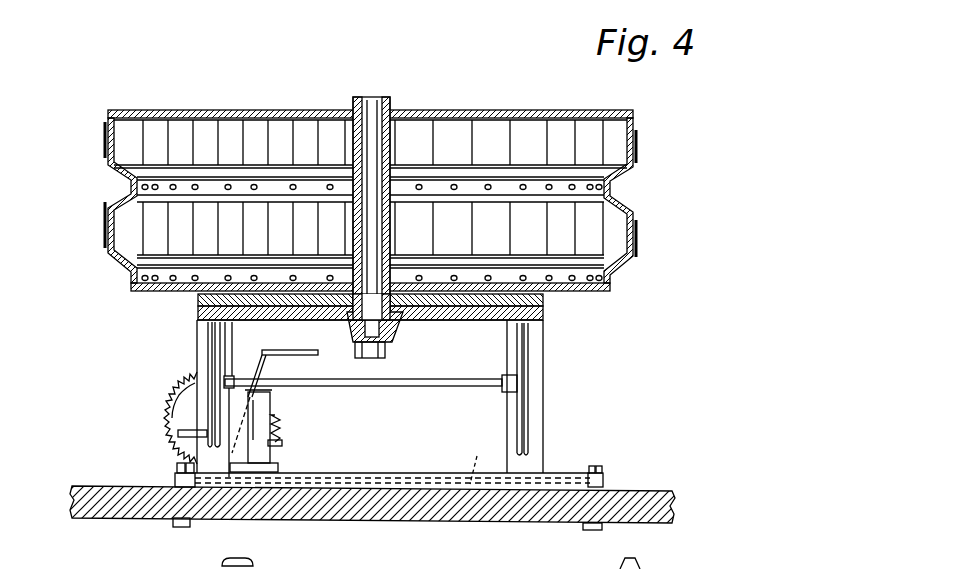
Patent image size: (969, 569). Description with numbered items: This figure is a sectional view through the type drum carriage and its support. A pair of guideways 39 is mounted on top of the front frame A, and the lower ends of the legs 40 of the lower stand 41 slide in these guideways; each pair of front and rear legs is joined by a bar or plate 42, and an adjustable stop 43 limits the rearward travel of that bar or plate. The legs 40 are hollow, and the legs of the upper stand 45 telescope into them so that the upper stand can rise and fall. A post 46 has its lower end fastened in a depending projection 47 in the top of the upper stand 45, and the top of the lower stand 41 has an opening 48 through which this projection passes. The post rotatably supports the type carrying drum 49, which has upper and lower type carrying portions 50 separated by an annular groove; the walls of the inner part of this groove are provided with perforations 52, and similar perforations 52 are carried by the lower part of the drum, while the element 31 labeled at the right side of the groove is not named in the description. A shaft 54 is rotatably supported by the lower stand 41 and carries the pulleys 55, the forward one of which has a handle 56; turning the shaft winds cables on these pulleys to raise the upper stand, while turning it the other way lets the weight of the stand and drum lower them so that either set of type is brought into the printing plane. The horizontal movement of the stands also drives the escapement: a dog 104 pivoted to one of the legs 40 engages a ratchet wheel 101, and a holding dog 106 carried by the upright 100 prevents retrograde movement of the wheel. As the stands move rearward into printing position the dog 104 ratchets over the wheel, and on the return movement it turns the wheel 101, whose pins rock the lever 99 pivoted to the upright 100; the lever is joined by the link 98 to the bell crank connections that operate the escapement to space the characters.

The type carrying drum 49 is at (573, 117).
The type carrying portions 50 is at (637, 147).
The perforated strip 31 is at (611, 188).
The perforations 52 is at (228, 184).
The post 46 is at (390, 100).
The opening 48 is at (392, 330).
The depending projection 47 is at (383, 355).
The upper stand 45 is at (543, 305).
The lower stand 41 is at (494, 322).
The legs 40 is at (197, 355).
The pulleys 55 is at (209, 340).
The shaft 54 is at (395, 388).
The link 98 is at (318, 352).
The lever 99 is at (267, 366).
The upright 100 is at (271, 400).
The holding dog 106 is at (282, 447).
The ratchet wheel 101 is at (166, 425).
The dog 104 is at (197, 385).
The handle 56 is at (180, 441).
The guideways 39 is at (417, 473).
The bar or plate 42 is at (477, 460).
The adjustable stop 43 is at (603, 475).
The front frame A is at (572, 508).